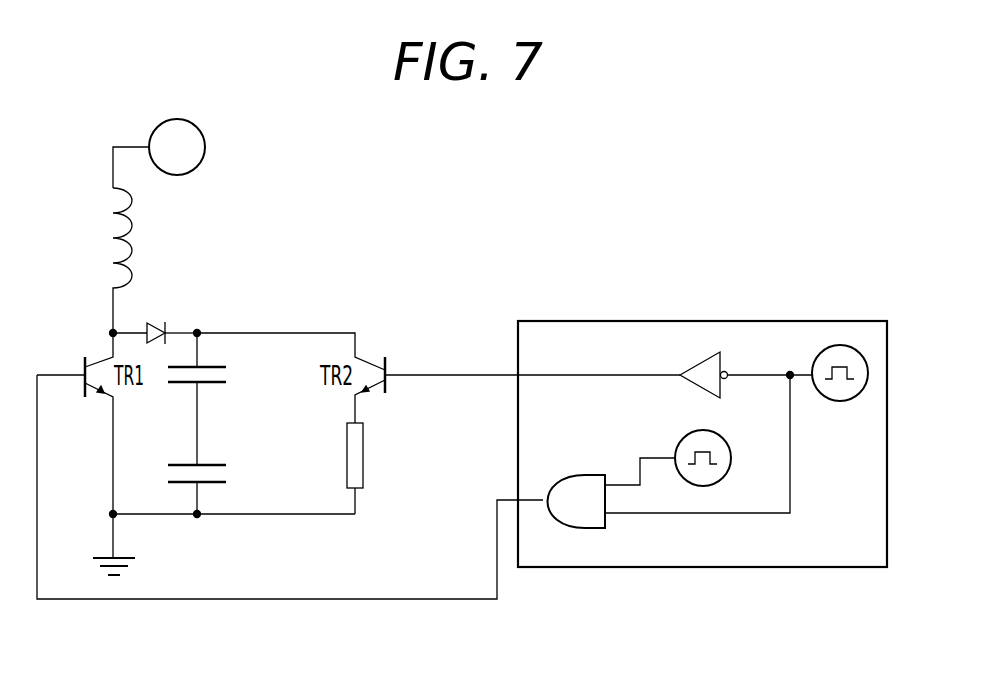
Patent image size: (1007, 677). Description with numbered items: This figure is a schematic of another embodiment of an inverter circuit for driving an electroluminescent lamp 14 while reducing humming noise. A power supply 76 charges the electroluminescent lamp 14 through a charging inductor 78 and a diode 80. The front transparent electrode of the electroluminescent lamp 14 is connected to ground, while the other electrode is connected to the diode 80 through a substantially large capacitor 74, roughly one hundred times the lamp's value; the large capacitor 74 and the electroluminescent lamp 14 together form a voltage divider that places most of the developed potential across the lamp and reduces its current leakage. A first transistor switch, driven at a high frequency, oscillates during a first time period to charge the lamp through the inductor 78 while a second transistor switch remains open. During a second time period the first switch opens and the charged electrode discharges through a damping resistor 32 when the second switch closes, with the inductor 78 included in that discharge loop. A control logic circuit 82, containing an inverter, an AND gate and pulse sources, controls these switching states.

The power supply 76 is at (205, 147).
The charging inductor 78 is at (113, 237).
The diode 80 is at (152, 326).
The large capacitor 74 is at (228, 375).
The electroluminescent lamp 14 is at (228, 472).
The damping resistor 32 is at (363, 455).
The control logic circuit 82 is at (691, 321).